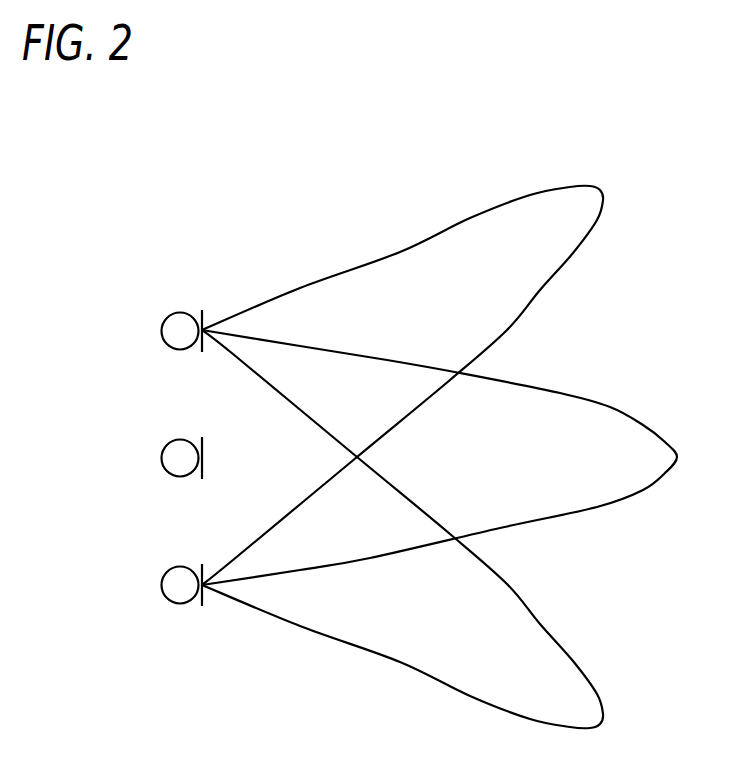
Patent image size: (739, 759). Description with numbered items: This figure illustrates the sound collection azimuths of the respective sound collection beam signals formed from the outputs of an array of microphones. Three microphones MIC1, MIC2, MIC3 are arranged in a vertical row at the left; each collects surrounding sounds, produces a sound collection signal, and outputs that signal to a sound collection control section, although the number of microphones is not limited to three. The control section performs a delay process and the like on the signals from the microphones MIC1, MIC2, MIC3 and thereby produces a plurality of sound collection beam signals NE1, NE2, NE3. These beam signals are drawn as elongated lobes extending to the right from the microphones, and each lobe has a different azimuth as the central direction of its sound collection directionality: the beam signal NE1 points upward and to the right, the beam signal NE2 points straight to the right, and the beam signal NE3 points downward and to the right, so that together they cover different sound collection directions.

The microphone MIC1 is at (181, 312).
The microphone MIC2 is at (181, 439).
The microphone MIC3 is at (181, 566).
The sound collection beam signal NE1 is at (603, 194).
The sound collection beam signal NE2 is at (603, 404).
The sound collection beam signal NE3 is at (603, 708).